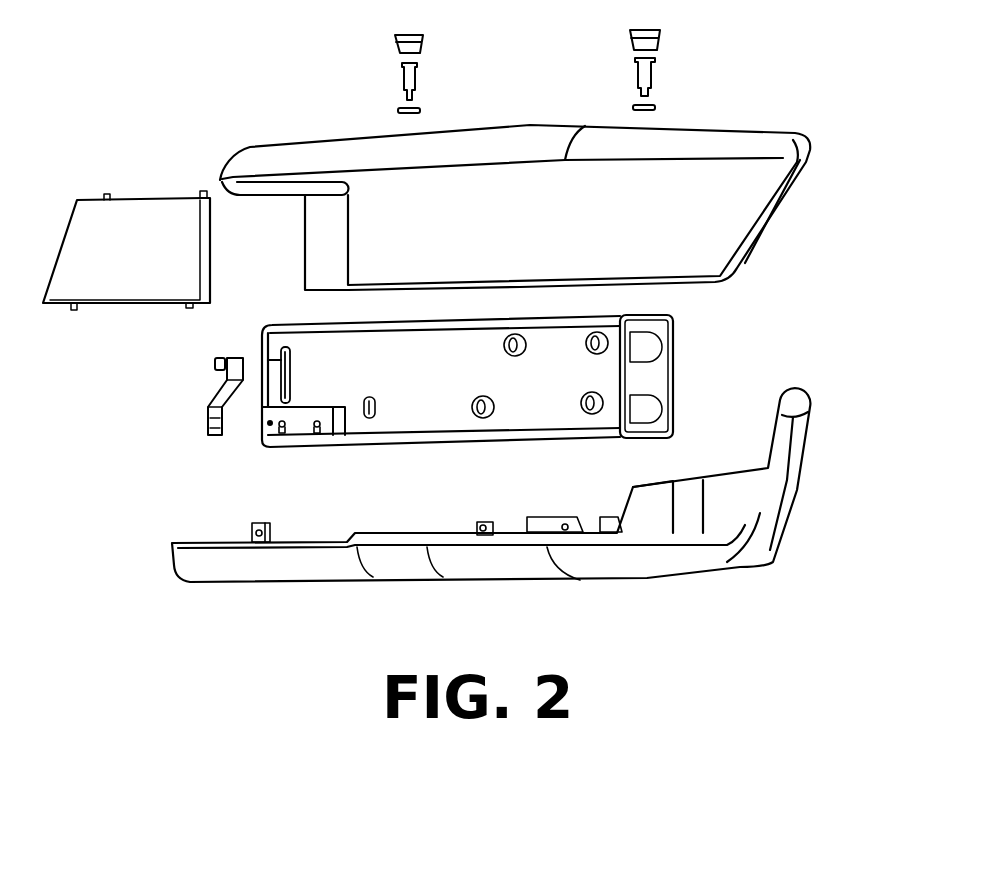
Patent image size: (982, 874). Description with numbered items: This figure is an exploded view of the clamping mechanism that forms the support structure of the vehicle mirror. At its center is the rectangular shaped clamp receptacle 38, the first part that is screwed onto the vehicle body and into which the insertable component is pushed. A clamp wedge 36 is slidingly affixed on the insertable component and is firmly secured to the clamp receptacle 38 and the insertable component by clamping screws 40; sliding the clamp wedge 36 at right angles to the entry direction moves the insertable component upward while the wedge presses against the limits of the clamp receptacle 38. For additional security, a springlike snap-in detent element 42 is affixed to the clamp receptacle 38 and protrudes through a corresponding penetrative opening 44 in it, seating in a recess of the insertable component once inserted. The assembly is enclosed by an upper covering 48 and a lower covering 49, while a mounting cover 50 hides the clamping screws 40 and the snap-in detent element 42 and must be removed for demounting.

The clamp wedge 36 is at (267, 415).
The clamp receptacle 38 is at (543, 412).
The clamping screws 40 is at (320, 433).
The snap-in detent element 42 is at (210, 393).
The penetrative opening 44 is at (263, 358).
The upper covering 48 is at (738, 215).
The lower covering 49 is at (775, 477).
The mounting cover 50 is at (132, 213).